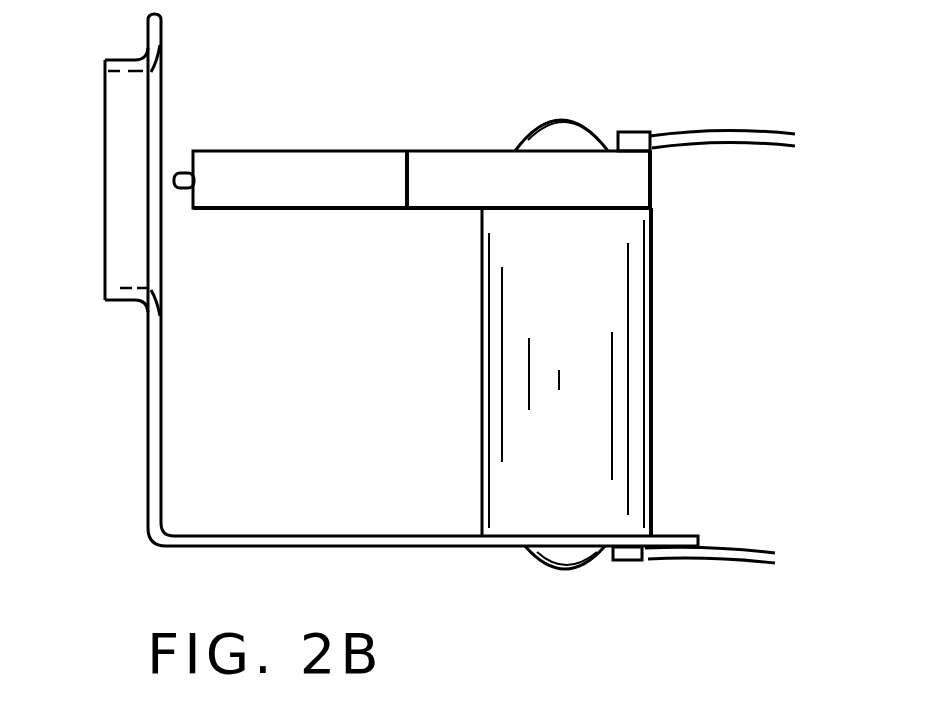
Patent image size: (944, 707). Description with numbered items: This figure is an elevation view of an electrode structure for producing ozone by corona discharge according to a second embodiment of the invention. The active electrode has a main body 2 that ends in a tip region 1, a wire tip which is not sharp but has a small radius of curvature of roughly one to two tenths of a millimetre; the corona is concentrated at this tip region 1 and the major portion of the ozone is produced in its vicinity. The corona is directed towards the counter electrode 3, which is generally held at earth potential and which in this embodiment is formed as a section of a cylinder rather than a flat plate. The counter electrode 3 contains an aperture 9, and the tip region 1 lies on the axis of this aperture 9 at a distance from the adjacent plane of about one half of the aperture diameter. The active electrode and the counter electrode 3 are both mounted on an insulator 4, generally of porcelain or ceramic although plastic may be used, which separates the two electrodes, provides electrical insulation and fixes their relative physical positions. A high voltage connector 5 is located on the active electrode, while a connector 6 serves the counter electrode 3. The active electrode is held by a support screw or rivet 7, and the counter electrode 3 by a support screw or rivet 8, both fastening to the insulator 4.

The tip region of the active electrode 1 is at (183, 172).
The main body of the active electrode 2 is at (287, 150).
The counter electrode 3 is at (113, 60).
The insulator 4 is at (622, 391).
The high voltage connector 5 is at (679, 131).
The connector of the counter electrode 6 is at (652, 558).
The support screw or rivet for the active electrode 7 is at (548, 120).
The support screw or rivet for the counter electrode 8 is at (575, 568).
The aperture 9 is at (118, 288).